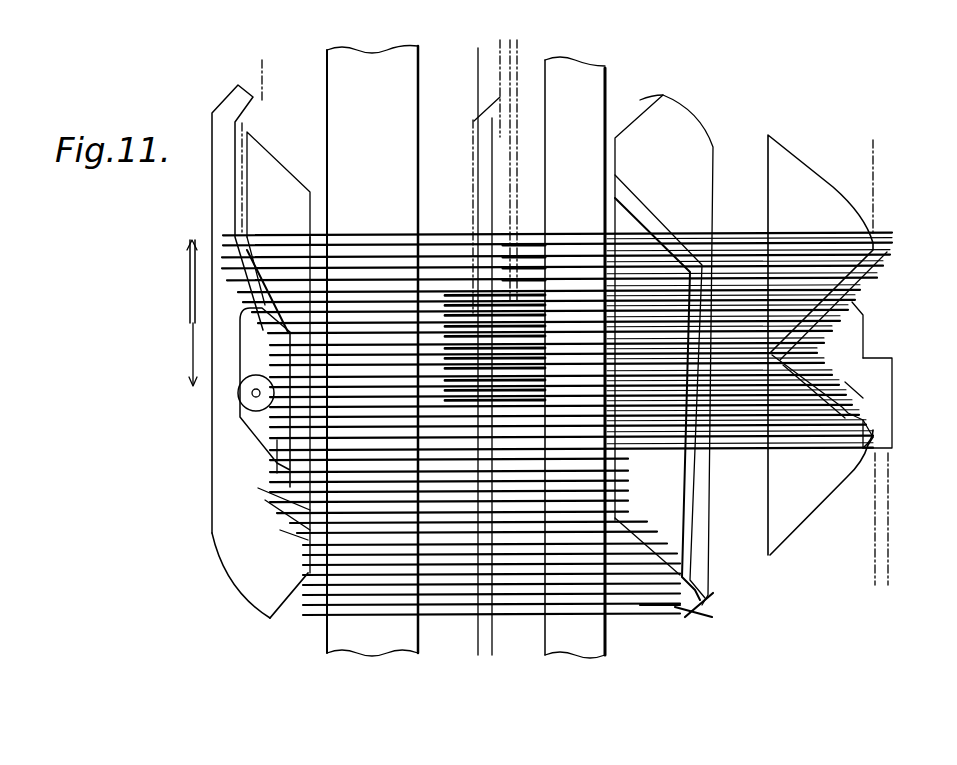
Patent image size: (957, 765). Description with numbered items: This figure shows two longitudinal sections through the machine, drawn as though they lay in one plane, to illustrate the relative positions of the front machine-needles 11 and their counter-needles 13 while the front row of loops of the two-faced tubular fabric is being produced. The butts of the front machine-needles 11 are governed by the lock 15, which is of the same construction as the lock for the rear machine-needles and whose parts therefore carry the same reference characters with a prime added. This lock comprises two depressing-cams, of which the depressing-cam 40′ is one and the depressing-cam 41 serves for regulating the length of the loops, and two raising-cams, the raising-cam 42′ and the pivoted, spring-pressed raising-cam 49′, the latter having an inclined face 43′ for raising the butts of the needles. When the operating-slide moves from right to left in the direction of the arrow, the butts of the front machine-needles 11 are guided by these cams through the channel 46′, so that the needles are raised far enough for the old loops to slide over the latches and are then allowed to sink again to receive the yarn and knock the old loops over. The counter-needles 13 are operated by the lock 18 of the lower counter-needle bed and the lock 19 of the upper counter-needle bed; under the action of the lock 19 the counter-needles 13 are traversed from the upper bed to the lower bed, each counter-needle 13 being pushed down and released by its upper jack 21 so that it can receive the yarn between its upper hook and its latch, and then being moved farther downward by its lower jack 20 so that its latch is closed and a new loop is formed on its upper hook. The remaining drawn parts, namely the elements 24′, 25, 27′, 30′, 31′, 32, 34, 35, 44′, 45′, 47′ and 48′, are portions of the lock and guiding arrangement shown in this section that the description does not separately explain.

The front machine-needle 11 is at (742, 455).
The counter-needle 13 is at (443, 237).
The lock 15 is at (870, 330).
The lock of the lower counter-needle bed 18 is at (208, 398).
The lock of the upper counter-needle bed 19 is at (676, 350).
The lower jack 20 is at (315, 237).
The upper jack 21 is at (644, 615).
The guide plate 24′ is at (278, 352).
The head of hook member 25 is at (634, 117).
The lower cam 27′ is at (289, 574).
The cam edge 30′ is at (648, 546).
The cam piece 31′ is at (265, 485).
The pivot 32 is at (256, 398).
The bar 34 is at (372, 351).
The bar 35 is at (575, 357).
The depressing-cam 40′ is at (829, 511).
The depressing-cam 41 is at (820, 345).
The raising-cam 42′ is at (829, 344).
The inclined face 43′ is at (900, 453).
The outer plate 44′ is at (185, 339).
The pivoted plate 45′ is at (210, 397).
The channel 46′ is at (889, 373).
The hook 47′ is at (267, 284).
The arrow member 48′ is at (714, 615).
The raising-cam 49′ is at (900, 403).